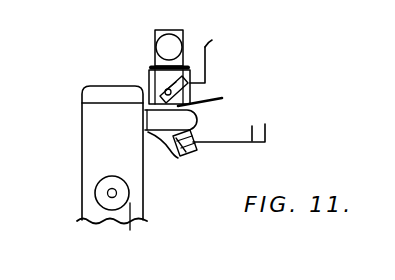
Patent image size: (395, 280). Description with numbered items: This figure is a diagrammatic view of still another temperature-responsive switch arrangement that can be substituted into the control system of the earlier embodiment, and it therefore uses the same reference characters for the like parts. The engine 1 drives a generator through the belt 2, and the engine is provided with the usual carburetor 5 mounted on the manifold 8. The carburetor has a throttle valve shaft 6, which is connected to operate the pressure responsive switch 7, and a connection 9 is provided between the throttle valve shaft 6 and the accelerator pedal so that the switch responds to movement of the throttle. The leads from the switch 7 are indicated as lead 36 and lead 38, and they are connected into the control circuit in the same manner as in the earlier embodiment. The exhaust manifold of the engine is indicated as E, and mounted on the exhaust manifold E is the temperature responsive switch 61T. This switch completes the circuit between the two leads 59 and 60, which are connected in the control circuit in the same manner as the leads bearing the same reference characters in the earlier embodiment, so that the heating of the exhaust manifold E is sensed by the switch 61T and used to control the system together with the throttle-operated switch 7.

The engine 1 is at (81, 112).
The belt 2 is at (100, 178).
The carburetor 5 is at (162, 80).
The throttle valve shaft 6 is at (153, 91).
The pressure responsive switch 7 is at (147, 74).
The manifold 8 is at (146, 132).
The connection 9 is at (222, 98).
The lead 36 is at (215, 83).
The lead 38 is at (207, 48).
The lead 59 is at (267, 138).
The lead 60 is at (252, 127).
The exhaust manifold E is at (173, 156).
The temperature responsive switch 61T is at (190, 156).